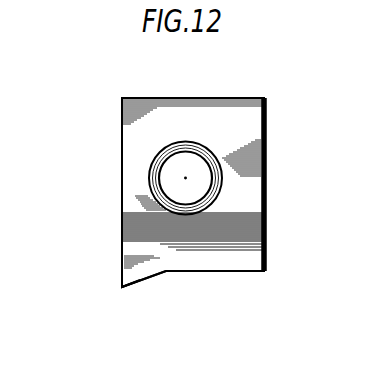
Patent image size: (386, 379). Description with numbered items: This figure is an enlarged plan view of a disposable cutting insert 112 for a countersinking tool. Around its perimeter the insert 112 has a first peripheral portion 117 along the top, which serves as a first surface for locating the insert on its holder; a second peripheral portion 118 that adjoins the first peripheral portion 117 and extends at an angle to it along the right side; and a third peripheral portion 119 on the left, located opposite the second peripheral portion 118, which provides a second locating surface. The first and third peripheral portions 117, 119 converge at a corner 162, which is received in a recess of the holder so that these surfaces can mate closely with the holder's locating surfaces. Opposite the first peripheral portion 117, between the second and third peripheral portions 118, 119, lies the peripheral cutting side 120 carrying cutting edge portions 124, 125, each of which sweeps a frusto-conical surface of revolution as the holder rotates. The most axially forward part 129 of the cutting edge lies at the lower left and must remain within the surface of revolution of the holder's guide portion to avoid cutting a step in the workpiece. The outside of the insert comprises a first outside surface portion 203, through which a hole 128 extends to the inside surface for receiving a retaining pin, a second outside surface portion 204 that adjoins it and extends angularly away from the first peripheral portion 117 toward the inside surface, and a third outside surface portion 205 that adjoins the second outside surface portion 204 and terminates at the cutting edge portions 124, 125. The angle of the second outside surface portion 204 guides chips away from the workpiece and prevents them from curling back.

The cutting insert 112 is at (114, 142).
The first peripheral portion 117 is at (230, 98).
The second peripheral portion 118 is at (266, 142).
The third peripheral portion 119 is at (122, 183).
The cutting side 120 is at (200, 272).
The cutting edge portion 124 is at (233, 272).
The cutting edge portion 125 is at (155, 277).
The hole 128 is at (208, 170).
The most axially forward part of cutting edge 129 is at (128, 287).
The corner 162 is at (124, 98).
The first outside surface portion 203 is at (192, 114).
The second outside surface portion 204 is at (256, 227).
The third outside surface portion 205 is at (253, 261).